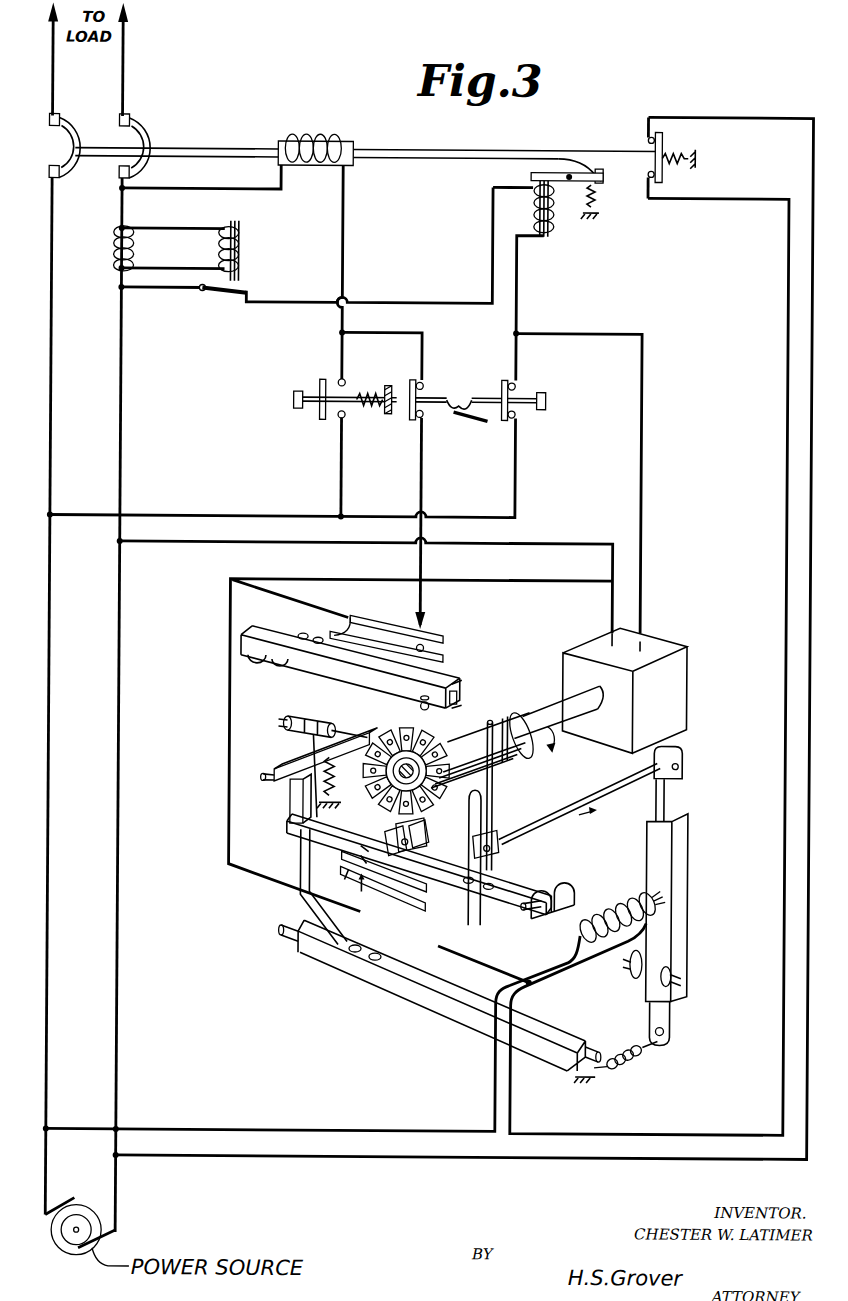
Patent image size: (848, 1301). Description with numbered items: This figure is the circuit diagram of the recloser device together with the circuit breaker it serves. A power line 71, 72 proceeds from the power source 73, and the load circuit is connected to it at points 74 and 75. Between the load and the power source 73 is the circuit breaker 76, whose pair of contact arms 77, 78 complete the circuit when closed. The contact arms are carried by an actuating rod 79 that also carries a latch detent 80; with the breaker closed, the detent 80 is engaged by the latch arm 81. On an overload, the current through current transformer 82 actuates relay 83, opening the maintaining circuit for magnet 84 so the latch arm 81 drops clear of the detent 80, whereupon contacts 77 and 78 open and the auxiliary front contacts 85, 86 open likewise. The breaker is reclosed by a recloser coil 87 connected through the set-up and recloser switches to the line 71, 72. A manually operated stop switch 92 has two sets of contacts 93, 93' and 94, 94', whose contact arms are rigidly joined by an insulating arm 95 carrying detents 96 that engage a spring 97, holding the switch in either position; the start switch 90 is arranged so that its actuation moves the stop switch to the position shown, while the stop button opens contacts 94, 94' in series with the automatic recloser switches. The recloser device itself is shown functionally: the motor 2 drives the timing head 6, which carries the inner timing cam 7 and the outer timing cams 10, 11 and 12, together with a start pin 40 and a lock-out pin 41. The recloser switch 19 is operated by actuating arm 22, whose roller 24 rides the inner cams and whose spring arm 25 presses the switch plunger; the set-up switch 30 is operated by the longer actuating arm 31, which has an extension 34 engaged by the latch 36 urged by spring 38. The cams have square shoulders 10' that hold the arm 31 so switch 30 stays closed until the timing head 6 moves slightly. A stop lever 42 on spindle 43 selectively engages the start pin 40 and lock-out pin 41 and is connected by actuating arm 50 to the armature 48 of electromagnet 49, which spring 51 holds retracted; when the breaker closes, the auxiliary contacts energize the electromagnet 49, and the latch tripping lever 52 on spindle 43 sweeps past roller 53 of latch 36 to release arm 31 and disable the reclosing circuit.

The load connection point 74 is at (48, 48).
The load connection point 75 is at (123, 48).
The circuit breaker 76 is at (150, 128).
The contact arm 77 is at (70, 180).
The contact arm 78 is at (146, 172).
The actuating rod 79 is at (238, 150).
The latch detent 80 is at (592, 168).
The latch arm 81 is at (594, 196).
The current transformer 82 is at (108, 272).
The relay 83 is at (238, 262).
The magnet 84 is at (548, 234).
The auxiliary front contact 85 is at (645, 137).
The auxiliary front contact 86 is at (652, 178).
The recloser coil 87 is at (300, 140).
The start switch 90 is at (318, 422).
The stop switch 92 is at (524, 396).
The contact 93 is at (494, 379).
The contact 93' is at (536, 431).
The contact 94 is at (398, 385).
The contact 94' is at (396, 431).
The insulating arm 95 is at (490, 398).
The detent 96 is at (456, 404).
The spring 97 is at (456, 420).
The power line 71 is at (47, 755).
The power line 72 is at (117, 755).
The power source 73 is at (58, 1250).
The motor 2 is at (662, 696).
The spring arm 25 is at (358, 614).
The recloser switch 19 is at (446, 648).
The actuating arm 22 is at (353, 666).
The roller 24 is at (466, 692).
The inner timing cam 7 is at (421, 705).
The outer timing cam 12 is at (398, 740).
The timing head 6 is at (386, 777).
The roller 53 is at (302, 716).
The latch tripping lever 52 is at (288, 738).
The latch 36 is at (288, 798).
The spring 38 is at (334, 790).
The extension 34 is at (305, 840).
The outer timing cam 10 is at (382, 832).
The square shoulder 10' is at (439, 833).
The set-up switch 30 is at (388, 896).
The actuating arm 31 is at (490, 870).
The lock-out pin 41 is at (496, 762).
The start pin 40 is at (494, 790).
The outer timing cam 11 is at (484, 824).
The stop lever 42 is at (505, 838).
The actuating arm 50 is at (586, 790).
The armature 48 is at (662, 889).
The electromagnet 49 is at (612, 906).
The spring 51 is at (630, 1070).
The spindle 43 is at (418, 998).